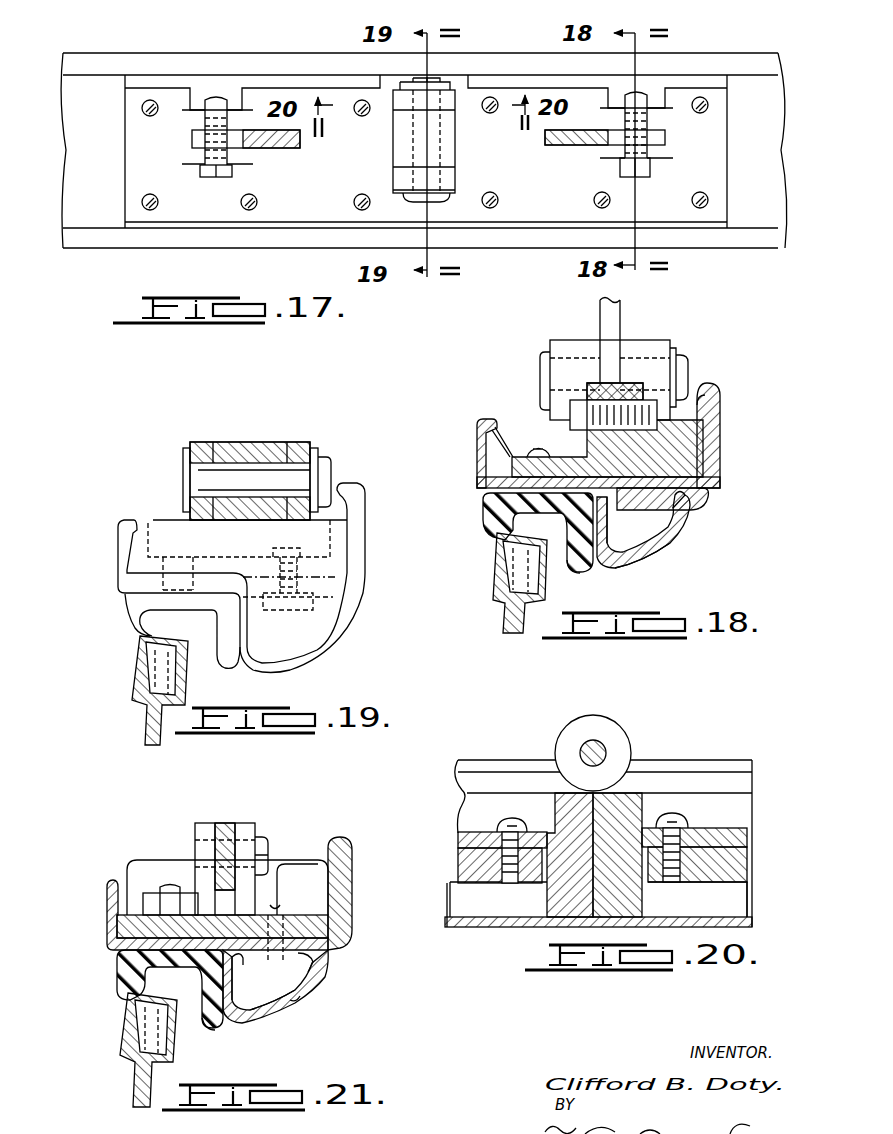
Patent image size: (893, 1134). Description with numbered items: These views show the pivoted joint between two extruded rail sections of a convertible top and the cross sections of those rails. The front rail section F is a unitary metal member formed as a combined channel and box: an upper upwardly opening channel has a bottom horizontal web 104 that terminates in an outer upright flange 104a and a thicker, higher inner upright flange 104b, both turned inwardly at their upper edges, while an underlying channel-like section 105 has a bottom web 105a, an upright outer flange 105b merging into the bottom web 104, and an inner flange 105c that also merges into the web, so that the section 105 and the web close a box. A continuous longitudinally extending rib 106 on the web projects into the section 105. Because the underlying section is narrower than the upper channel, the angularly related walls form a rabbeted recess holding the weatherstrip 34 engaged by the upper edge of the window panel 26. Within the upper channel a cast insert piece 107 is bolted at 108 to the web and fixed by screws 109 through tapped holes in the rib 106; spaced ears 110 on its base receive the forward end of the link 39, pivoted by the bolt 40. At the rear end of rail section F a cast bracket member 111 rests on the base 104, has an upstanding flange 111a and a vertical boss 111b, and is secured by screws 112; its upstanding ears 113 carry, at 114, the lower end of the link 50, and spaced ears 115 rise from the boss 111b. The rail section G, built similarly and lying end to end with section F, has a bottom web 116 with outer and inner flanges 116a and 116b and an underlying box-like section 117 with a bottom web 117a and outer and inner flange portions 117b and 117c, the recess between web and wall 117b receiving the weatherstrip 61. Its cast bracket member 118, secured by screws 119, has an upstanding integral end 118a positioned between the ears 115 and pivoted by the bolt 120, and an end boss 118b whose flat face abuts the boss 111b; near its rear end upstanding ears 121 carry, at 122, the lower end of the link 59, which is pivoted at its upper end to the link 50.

In FIG. 19, the window panel 26 is at (145, 710).
In FIG. 18, the window panel 26 is at (500, 605).
In FIG. 21, the window panel 26 is at (133, 1060).
In FIG. 19, the weatherstrip 34 is at (227, 668).
In FIG. 21, the weatherstrip 34 is at (228, 1028).
In FIG. 21, the link 39 is at (225, 823).
In FIG. 21, the bolt 40 is at (268, 845).
In FIG. 17, the link 50 is at (282, 147).
In FIG. 17, the link 59 is at (570, 148).
In FIG. 18, the link 59 is at (617, 316).
In FIG. 18, the weatherstrip 61 is at (581, 571).
In FIG. 17, the bottom horizontal web 104 is at (95, 218).
In FIG. 19, the bottom horizontal web 104 is at (133, 590).
In FIG. 21, the bottom horizontal web 104 is at (125, 953).
In FIG. 20, the bottom horizontal web 104 is at (450, 897).
In FIG. 21, the outer upright flange 104a is at (113, 917).
In FIG. 21, the upright flange 104b is at (345, 885).
In FIG. 19, the underlying channel-like section 105 is at (343, 634).
In FIG. 21, the underlying channel-like section 105 is at (327, 980).
In FIG. 21, the bottom web 105a is at (298, 1013).
In FIG. 21, the upright outer flange 105b is at (233, 997).
In FIG. 21, the inner flange 105c is at (330, 965).
In FIG. 21, the longitudinally extending rib 106 is at (293, 1000).
In FIG. 21, the insert piece 107 is at (317, 882).
In FIG. 21, the bolt 108 is at (175, 885).
In FIG. 19, the screws 109 is at (345, 600).
In FIG. 21, the screws 109 is at (278, 903).
In FIG. 21, the spaced ears 110 is at (207, 823).
In FIG. 17, the bracket member 111 is at (313, 208).
In FIG. 20, the bracket member 111 is at (470, 830).
In FIG. 17, the upstanding flange 111a is at (260, 83).
In FIG. 19, the upstanding flange 111a is at (337, 527).
In FIG. 17, the vertical boss 111b is at (398, 210).
In FIG. 19, the vertical boss 111b is at (178, 532).
In FIG. 20, the vertical boss 111b is at (553, 898).
In FIG. 17, the screws 112 is at (365, 187).
In FIG. 20, the screws 112 is at (508, 823).
In FIG. 17, the upstanding ears 113 is at (200, 127).
In FIG. 17, the pivot 114 is at (212, 178).
In FIG. 17, the spaced ears 115 is at (455, 97).
In FIG. 19, the spaced ears 115 is at (192, 442).
In FIG. 18, the spaced ears 115 is at (548, 345).
In FIG. 20, the spaced ears 115 is at (610, 731).
In FIG. 17, the bottom web 116 is at (757, 218).
In FIG. 18, the bottom web 116 is at (481, 503).
In FIG. 20, the bottom web 116 is at (745, 862).
In FIG. 18, the outer flange 116a is at (483, 463).
In FIG. 18, the inner flange 116b is at (722, 445).
In FIG. 18, the box-like section 117 is at (705, 527).
In FIG. 18, the bottom web 117a is at (656, 554).
In FIG. 18, the outer flange portion 117b is at (603, 526).
In FIG. 18, the inner flange portion 117c is at (701, 507).
In FIG. 17, the bracket member 118 is at (563, 212).
In FIG. 18, the bracket member 118 is at (690, 462).
In FIG. 20, the bracket member 118 is at (727, 828).
In FIG. 17, the upstanding integral end 118a is at (452, 152).
In FIG. 19, the upstanding integral end 118a is at (248, 442).
In FIG. 18, the upstanding integral end 118a is at (645, 339).
In FIG. 20, the end boss 118b is at (645, 893).
In FIG. 17, the screws 119 is at (610, 200).
In FIG. 18, the screws 119 is at (527, 447).
In FIG. 20, the screws 119 is at (683, 819).
In FIG. 17, the bolt 120 is at (440, 197).
In FIG. 19, the bolt 120 is at (303, 468).
In FIG. 18, the bolt 120 is at (689, 369).
In FIG. 20, the bolt 120 is at (600, 754).
In FIG. 17, the upstanding ears 121 is at (660, 140).
In FIG. 18, the upstanding ears 121 is at (588, 405).
In FIG. 17, the pivot 122 is at (655, 168).
In FIG. 18, the pivot 122 is at (570, 423).
In FIG. 17, the front rail section F is at (232, 231).
In FIG. 19, the front rail section F is at (369, 541).
In FIG. 21, the front rail section F is at (354, 846).
In FIG. 20, the front rail section F is at (481, 928).
In FIG. 17, the rail section G is at (548, 239).
In FIG. 18, the rail section G is at (724, 412).
In FIG. 20, the rail section G is at (756, 918).